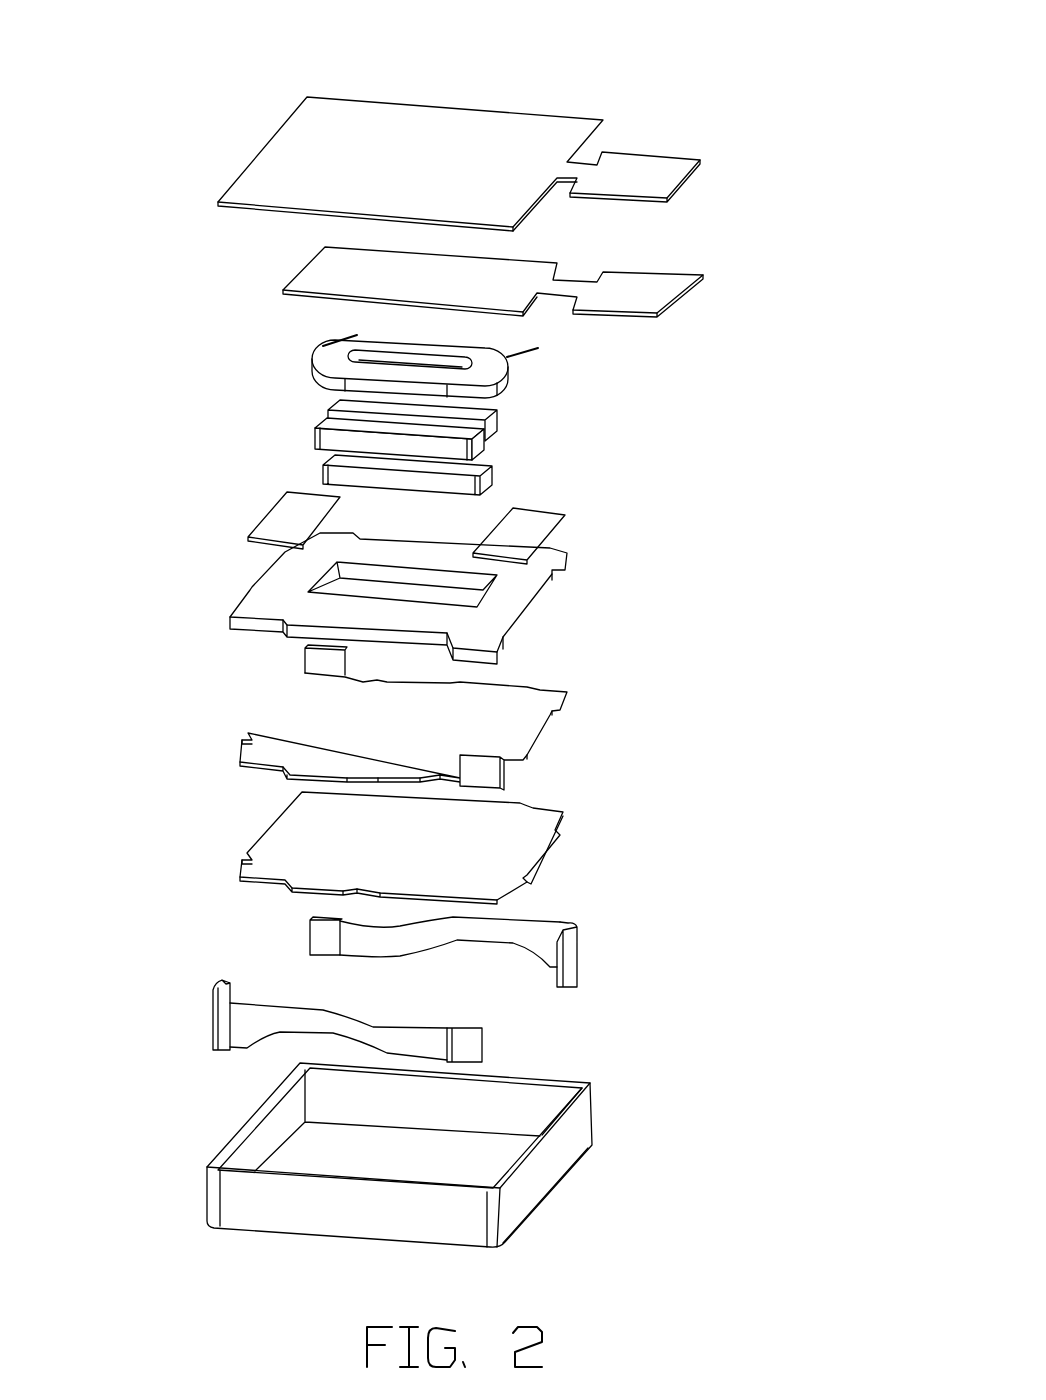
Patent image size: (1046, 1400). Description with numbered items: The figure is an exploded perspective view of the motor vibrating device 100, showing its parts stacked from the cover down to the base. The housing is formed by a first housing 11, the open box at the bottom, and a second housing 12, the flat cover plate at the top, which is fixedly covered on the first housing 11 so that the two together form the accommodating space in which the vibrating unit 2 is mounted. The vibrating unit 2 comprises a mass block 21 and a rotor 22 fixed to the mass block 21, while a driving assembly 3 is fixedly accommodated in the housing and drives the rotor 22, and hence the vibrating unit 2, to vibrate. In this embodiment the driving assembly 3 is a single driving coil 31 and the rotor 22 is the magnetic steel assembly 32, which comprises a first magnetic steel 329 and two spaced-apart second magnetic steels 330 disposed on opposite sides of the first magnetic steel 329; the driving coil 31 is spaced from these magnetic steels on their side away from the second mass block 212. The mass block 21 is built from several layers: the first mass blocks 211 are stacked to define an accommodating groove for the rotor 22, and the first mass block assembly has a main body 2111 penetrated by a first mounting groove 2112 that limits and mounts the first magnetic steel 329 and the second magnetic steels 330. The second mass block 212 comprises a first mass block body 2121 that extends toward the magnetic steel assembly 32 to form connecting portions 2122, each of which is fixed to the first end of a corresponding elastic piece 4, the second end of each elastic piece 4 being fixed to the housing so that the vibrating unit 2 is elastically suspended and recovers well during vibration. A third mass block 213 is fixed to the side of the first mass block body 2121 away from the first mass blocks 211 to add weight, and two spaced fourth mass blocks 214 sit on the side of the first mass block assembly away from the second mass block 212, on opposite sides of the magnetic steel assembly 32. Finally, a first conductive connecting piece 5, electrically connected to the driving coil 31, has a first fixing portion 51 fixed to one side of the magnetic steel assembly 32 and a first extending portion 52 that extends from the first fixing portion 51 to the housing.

The motor vibrating device 100 is at (482, 33).
The first housing 11 is at (213, 1192).
The second housing 12 is at (273, 172).
The vibrating unit 2 is at (508, 619).
The mass block 21 is at (554, 698).
The first mass blocks 211 is at (520, 602).
The main body 2111 is at (503, 637).
The first mounting groove 2112 is at (467, 590).
The second mass block 212 is at (525, 717).
The first mass block body 2121 is at (522, 705).
The connecting portions 2122 is at (487, 772).
The third mass block 213 is at (520, 848).
The fourth mass blocks 214 is at (530, 548).
The rotor 22 is at (481, 432).
The driving assembly 3 is at (568, 432).
The driving coil 31 is at (507, 370).
The magnetic steel assembly 32 is at (549, 465).
The first magnetic steel 329 is at (487, 478).
The second magnetic steels 330 is at (497, 420).
The elastic pieces 4 is at (537, 943).
The first conductive connecting piece 5 is at (558, 252).
The first fixing portion 51 is at (497, 265).
The first extending portion 52 is at (652, 296).